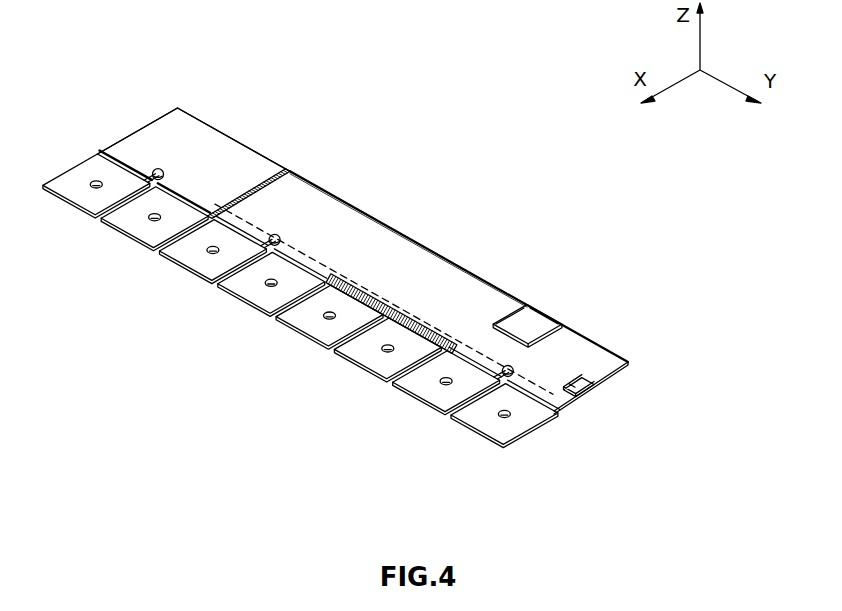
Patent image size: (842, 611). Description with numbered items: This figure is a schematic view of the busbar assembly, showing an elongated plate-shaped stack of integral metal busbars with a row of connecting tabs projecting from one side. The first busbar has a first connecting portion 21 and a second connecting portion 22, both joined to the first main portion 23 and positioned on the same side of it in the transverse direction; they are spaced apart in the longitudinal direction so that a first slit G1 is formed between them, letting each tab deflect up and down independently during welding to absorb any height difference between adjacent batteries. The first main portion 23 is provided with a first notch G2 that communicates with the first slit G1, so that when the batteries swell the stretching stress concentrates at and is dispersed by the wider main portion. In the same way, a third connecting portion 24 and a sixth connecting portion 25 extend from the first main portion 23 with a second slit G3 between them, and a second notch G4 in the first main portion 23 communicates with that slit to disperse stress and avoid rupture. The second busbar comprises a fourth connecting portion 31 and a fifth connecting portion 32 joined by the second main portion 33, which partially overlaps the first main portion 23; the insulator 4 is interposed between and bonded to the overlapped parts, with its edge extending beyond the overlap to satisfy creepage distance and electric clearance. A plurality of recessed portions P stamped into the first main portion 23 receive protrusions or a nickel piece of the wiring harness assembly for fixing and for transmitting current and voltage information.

The insulator 4 is at (288, 178).
The first connecting portion 21 is at (490, 425).
The second connecting portion 22 is at (438, 397).
The first main portion 23 is at (452, 277).
The third connecting portion 24 is at (243, 290).
The sixth connecting portion 25 is at (193, 260).
The fourth connecting portion 31 is at (317, 328).
The fifth connecting portion 32 is at (77, 188).
The second main portion 33 is at (222, 150).
The recessed portion P is at (538, 322).
The first slit G1 is at (498, 382).
The first notch G2 is at (519, 371).
The second slit G3 is at (242, 253).
The second notch G4 is at (285, 239).